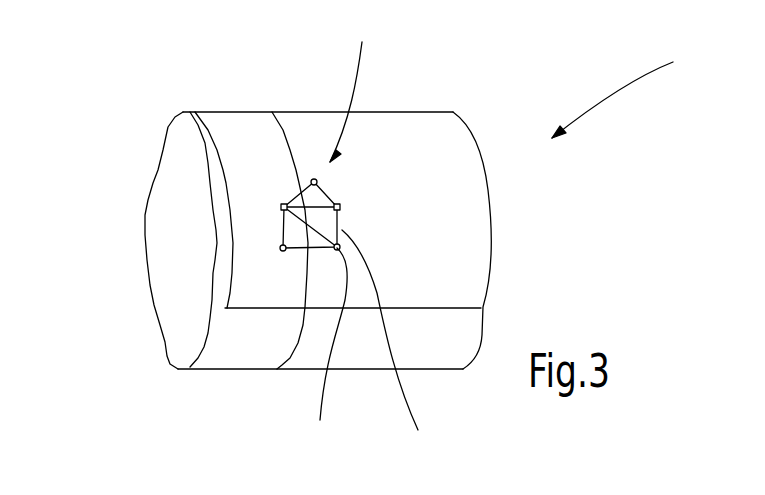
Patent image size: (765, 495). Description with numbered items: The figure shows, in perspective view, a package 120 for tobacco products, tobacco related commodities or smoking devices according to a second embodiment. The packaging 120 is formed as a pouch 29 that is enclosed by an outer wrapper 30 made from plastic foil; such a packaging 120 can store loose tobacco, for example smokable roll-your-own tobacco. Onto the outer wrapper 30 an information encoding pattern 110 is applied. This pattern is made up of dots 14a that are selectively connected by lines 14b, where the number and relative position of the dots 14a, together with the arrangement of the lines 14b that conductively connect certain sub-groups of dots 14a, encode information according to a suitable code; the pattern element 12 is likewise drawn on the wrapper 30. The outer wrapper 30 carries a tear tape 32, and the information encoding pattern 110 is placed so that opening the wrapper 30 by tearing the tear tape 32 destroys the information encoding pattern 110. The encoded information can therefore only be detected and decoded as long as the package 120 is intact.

The sensor 12 is at (278, 225).
The dots 14a is at (332, 349).
The lines 14b is at (402, 340).
The pouch 29 is at (403, 177).
The outer wrapper 30 is at (183, 112).
The tear tape 32 is at (297, 333).
The information encoding pattern 110 is at (367, 92).
The package 120 is at (636, 92).